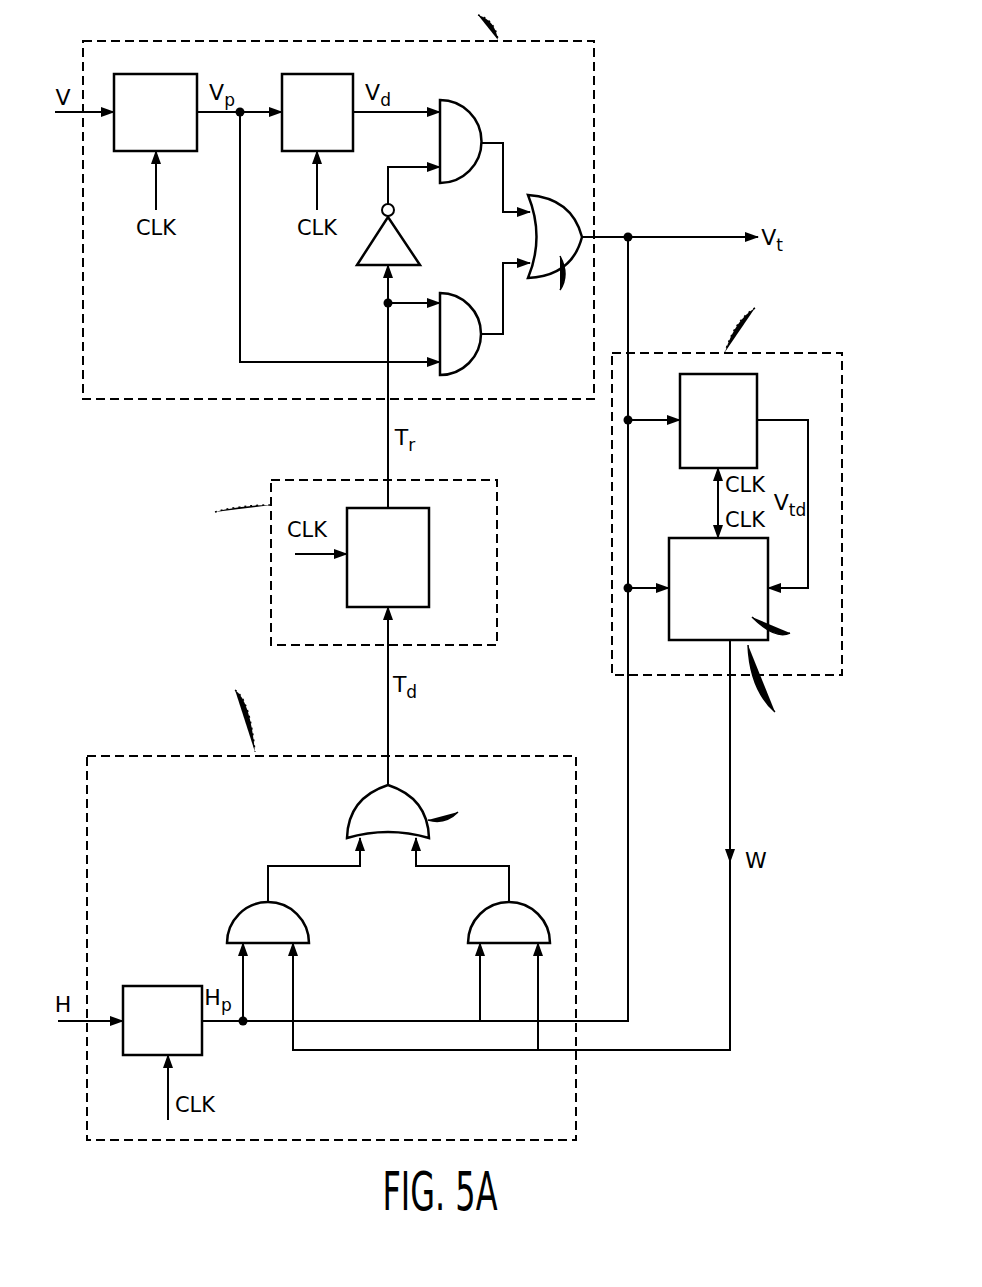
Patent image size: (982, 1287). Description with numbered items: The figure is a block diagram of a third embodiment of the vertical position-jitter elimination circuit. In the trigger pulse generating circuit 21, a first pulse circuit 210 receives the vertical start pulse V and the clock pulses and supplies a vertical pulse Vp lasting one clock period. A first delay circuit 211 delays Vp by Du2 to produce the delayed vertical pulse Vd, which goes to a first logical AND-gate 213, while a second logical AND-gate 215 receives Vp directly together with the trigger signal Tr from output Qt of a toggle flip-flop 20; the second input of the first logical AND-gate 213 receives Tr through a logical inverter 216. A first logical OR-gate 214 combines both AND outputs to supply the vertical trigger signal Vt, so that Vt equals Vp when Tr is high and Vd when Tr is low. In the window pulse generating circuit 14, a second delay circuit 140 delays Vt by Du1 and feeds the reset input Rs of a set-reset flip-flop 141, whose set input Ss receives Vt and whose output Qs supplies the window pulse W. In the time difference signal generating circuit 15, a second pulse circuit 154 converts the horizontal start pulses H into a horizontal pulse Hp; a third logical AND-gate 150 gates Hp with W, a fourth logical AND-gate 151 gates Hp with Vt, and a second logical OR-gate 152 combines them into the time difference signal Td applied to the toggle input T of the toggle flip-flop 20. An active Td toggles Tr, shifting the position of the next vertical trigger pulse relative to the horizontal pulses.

The trigger pulse generating circuit 21 is at (165, 38).
The first pulse circuit 210 is at (197, 140).
The first delay circuit 211 is at (284, 152).
The first logical AND-gate 213 is at (476, 120).
The first logical OR-gate 214 is at (560, 196).
The second logical AND-gate 215 is at (468, 372).
The logical inverter 216 is at (410, 232).
The toggle flip-flop 20 is at (328, 478).
The window pulse generating circuit 14 is at (645, 352).
The second delay circuit 140 is at (757, 407).
The set-reset flip-flop 141 is at (688, 538).
The time difference signal generating circuit 15 is at (205, 755).
The third logical AND-gate 150 is at (232, 925).
The fourth logical AND-gate 151 is at (468, 928).
The second logical OR-gate 152 is at (350, 820).
The second pulse circuit 154 is at (162, 985).